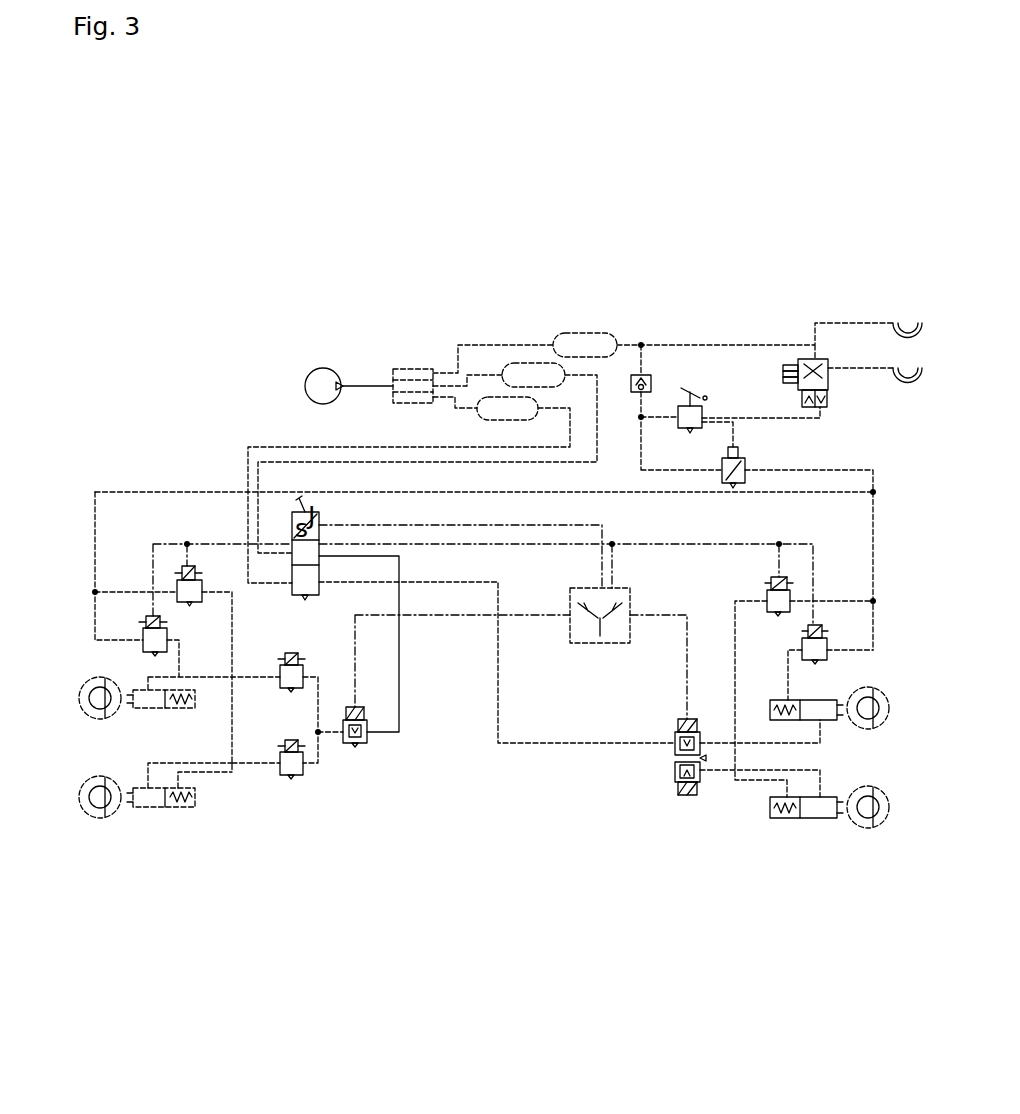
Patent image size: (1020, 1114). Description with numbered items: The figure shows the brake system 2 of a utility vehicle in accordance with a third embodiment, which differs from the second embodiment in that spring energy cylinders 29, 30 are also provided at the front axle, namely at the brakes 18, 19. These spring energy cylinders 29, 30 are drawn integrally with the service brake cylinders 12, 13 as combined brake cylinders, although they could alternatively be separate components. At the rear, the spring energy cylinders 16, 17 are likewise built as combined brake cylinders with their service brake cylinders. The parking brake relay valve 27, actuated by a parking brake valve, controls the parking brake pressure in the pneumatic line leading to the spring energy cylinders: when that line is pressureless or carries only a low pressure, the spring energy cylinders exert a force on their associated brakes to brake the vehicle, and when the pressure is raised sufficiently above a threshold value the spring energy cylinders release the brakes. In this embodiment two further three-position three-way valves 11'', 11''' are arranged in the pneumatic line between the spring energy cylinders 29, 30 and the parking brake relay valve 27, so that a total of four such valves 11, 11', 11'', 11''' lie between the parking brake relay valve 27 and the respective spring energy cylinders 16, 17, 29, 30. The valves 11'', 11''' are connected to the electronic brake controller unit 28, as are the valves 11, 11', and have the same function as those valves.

The brake system 2 is at (603, 308).
The 3/3-way valve 11 is at (660, 778).
The 3/3-way valve 11' is at (742, 803).
The 3/3-way valve 11'' is at (90, 514).
The 3/3-way valve 11''' is at (127, 465).
The service brake cylinder 12 is at (140, 702).
The service brake cylinder 13 is at (140, 800).
The spring energy cylinder 16 is at (790, 712).
The spring energy cylinder 17 is at (795, 818).
The brake 18 is at (104, 695).
The brake 19 is at (108, 790).
The parking brake relay valve 27 is at (729, 474).
The electronic brake controller unit 28 is at (619, 636).
The spring energy cylinder 29 is at (186, 706).
The spring energy cylinder 30 is at (173, 805).